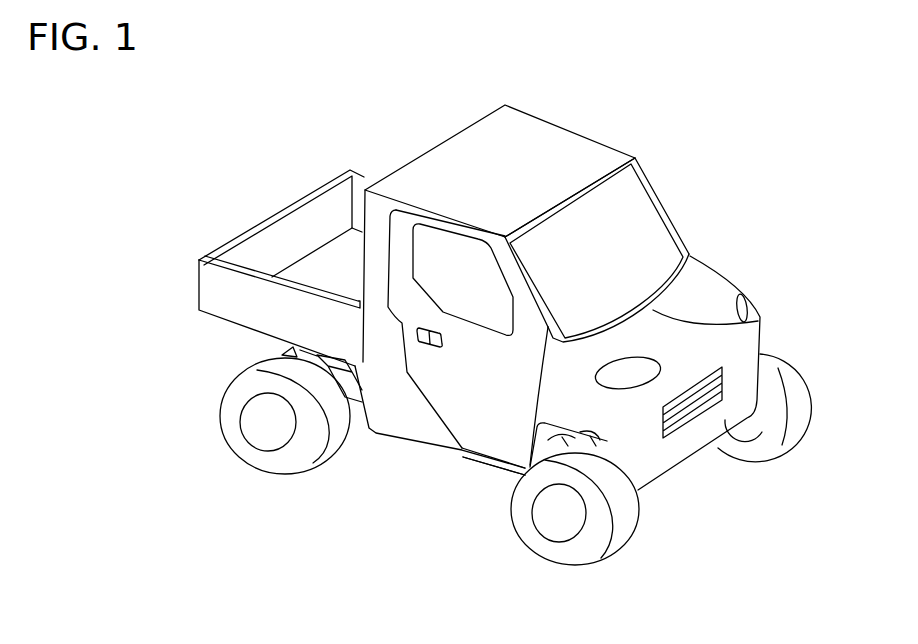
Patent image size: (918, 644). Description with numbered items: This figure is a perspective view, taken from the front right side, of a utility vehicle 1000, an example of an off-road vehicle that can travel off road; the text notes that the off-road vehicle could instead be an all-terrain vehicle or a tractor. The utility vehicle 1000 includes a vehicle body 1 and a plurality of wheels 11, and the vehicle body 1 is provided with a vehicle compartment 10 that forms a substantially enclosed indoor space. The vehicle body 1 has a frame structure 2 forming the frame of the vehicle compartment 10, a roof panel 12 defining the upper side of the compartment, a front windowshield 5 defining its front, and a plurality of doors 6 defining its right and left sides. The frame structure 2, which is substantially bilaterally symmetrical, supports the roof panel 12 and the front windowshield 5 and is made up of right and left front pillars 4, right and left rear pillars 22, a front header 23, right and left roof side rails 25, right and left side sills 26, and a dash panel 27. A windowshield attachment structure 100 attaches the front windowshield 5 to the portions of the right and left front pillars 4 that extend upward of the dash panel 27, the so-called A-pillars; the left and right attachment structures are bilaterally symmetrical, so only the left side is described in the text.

The utility vehicle 1000 is at (321, 143).
The windowshield attachment structure 100 is at (729, 233).
The vehicle body 1 is at (775, 321).
The frame structure 2 is at (664, 181).
The front pillar 4 is at (523, 257).
The front windowshield 5 is at (633, 240).
The door 6 is at (453, 400).
The vehicle compartment 10 is at (567, 143).
The wheel 11 is at (802, 417).
The roof panel 12 is at (452, 152).
The rear pillar 22 is at (360, 247).
The front header 23 is at (583, 195).
The roof side rail 25 is at (442, 217).
The side sill 26 is at (477, 462).
The dash panel 27 is at (760, 326).